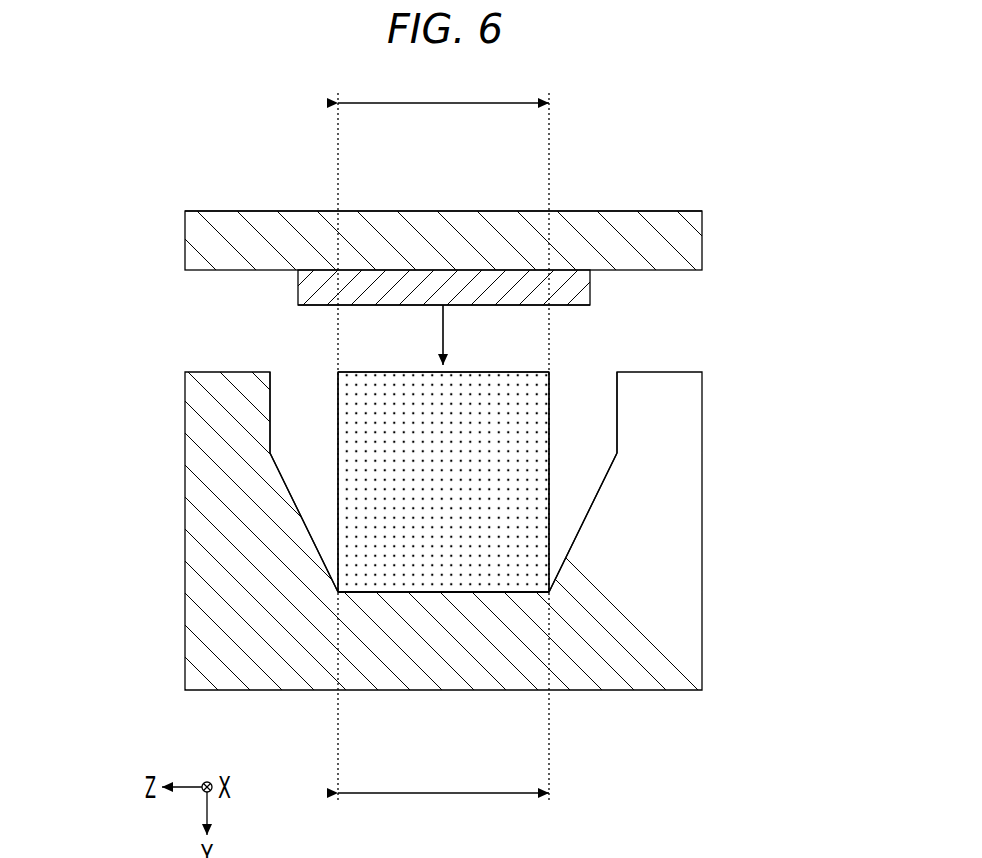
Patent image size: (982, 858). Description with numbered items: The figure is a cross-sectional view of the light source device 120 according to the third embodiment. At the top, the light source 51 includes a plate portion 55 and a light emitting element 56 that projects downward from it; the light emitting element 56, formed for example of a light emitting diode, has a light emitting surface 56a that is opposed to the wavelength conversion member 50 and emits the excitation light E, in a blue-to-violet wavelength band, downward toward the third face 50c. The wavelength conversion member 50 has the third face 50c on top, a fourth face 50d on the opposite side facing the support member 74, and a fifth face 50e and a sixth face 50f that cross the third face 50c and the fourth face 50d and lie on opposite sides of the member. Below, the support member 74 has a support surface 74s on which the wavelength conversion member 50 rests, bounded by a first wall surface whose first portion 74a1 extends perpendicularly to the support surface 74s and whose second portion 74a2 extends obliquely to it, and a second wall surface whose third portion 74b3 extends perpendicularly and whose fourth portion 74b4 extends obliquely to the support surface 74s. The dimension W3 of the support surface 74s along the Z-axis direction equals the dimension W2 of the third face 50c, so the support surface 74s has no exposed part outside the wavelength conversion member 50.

The light source device 120 is at (429, 194).
The light source 51 is at (446, 180).
The plate portion 55 is at (622, 218).
The light emitting element 56 is at (440, 229).
The light emitting surface 56a is at (493, 308).
The excitation light E is at (450, 343).
The dimension of the third face W2 is at (443, 85).
The dimension of the support surface W3 is at (443, 811).
The wavelength conversion member 50 is at (448, 534).
The third face 50c is at (535, 372).
The fourth face 50d is at (405, 594).
The fifth face 50e is at (338, 478).
The sixth face 50f is at (550, 483).
The support member 74 is at (432, 526).
The first portion 74a1 is at (278, 416).
The second portion 74a2 is at (328, 552).
The third portion 74b3 is at (609, 395).
The fourth portion 74b4 is at (585, 515).
The support surface 74s is at (489, 594).